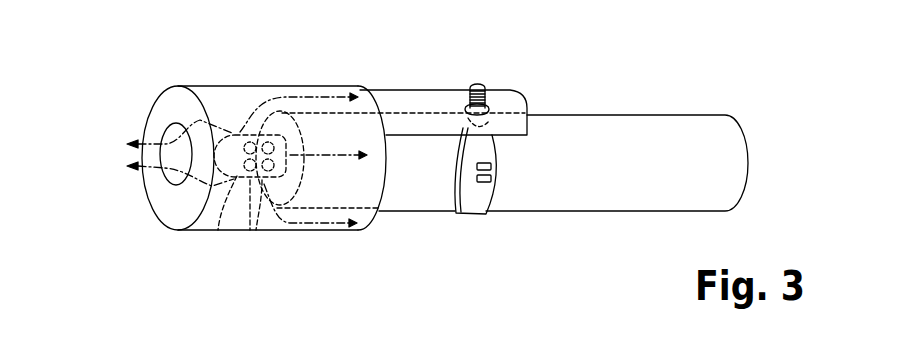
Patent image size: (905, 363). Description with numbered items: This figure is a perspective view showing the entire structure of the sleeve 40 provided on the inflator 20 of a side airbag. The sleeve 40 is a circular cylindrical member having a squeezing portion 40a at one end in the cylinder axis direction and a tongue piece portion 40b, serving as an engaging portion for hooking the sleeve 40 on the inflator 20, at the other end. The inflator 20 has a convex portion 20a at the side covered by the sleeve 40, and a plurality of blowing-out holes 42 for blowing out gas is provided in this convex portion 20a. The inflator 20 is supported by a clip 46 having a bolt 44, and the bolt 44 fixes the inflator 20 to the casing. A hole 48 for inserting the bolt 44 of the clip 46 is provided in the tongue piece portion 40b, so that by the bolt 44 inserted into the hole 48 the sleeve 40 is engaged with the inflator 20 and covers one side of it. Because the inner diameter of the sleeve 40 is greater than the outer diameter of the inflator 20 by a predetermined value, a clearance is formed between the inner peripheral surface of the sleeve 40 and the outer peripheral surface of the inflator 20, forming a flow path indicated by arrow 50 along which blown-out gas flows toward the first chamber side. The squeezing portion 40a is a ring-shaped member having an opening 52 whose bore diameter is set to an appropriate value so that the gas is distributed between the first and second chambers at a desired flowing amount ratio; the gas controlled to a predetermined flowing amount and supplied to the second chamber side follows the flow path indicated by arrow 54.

The inflator 20 is at (643, 130).
The convex portion 20a is at (218, 231).
The sleeve 40 is at (259, 84).
The squeezing portion 40a is at (172, 105).
The tongue piece portion 40b is at (415, 103).
The blowing-out holes 42 is at (251, 231).
The bolt 44 is at (480, 83).
The clip 46 is at (470, 216).
The hole 48 is at (488, 107).
The arrow 50 is at (328, 97).
The opening 52 is at (164, 139).
The arrow 54 is at (140, 183).